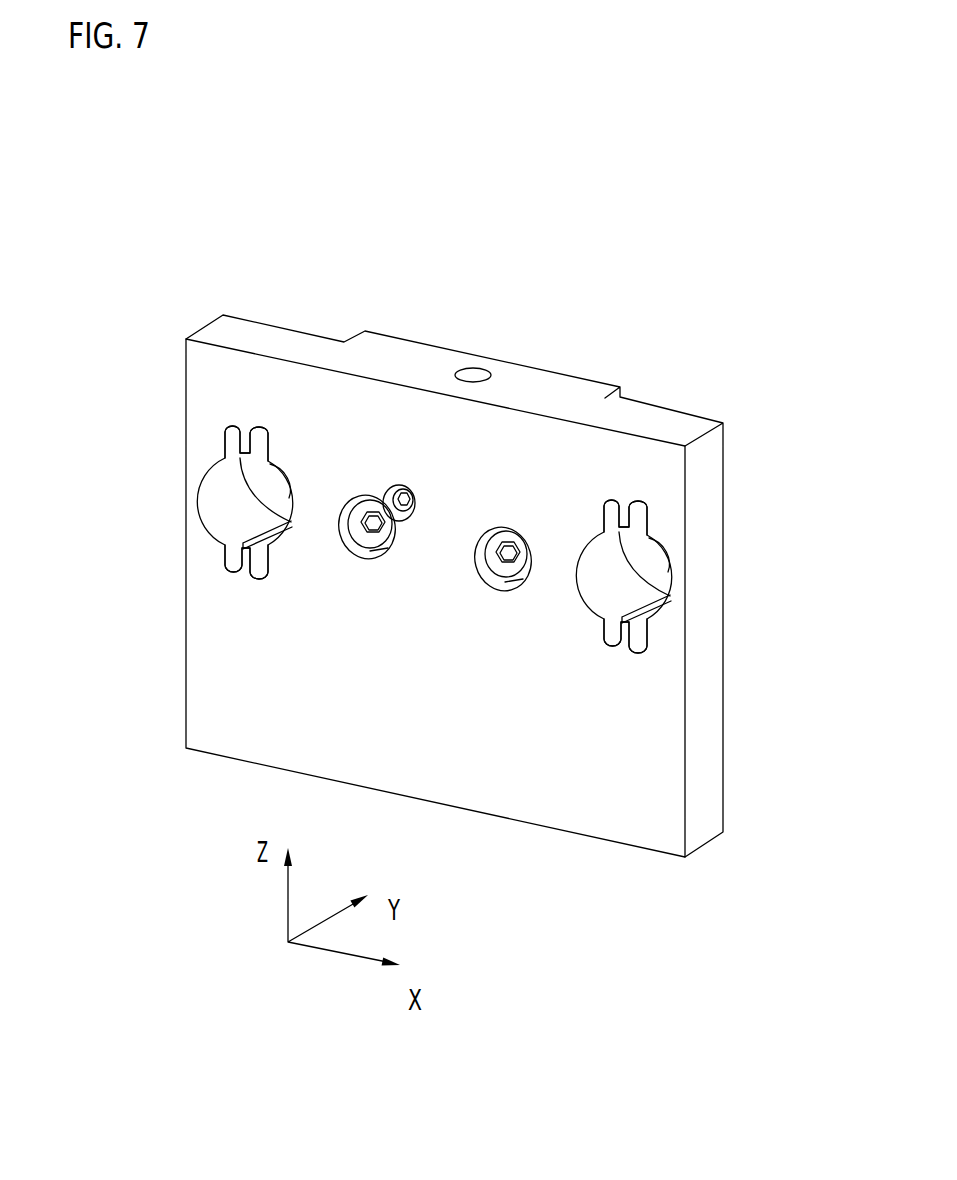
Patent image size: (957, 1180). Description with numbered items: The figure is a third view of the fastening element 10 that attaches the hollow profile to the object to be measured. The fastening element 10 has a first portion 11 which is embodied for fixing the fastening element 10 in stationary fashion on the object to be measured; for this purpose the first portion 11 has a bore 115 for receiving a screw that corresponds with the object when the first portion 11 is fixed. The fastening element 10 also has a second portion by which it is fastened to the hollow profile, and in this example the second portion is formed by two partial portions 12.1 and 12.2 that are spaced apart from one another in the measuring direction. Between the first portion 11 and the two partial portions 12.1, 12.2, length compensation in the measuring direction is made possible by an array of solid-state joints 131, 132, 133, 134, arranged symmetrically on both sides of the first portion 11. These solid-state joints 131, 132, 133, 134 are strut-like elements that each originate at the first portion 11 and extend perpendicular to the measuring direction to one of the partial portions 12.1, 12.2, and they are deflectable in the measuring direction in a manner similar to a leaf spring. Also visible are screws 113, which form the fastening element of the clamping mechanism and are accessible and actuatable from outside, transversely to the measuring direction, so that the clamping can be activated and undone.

The fastening element 10 is at (569, 872).
The first portion 11 is at (300, 407).
The screws 113 is at (364, 505).
The bore 115 is at (472, 372).
The partial portion 12.1 is at (653, 578).
The partial portion 12.2 is at (270, 489).
The solid-state joint 131 is at (243, 558).
The solid-state joint 132 is at (240, 432).
The solid-state joint 133 is at (623, 637).
The solid-state joint 134 is at (637, 512).